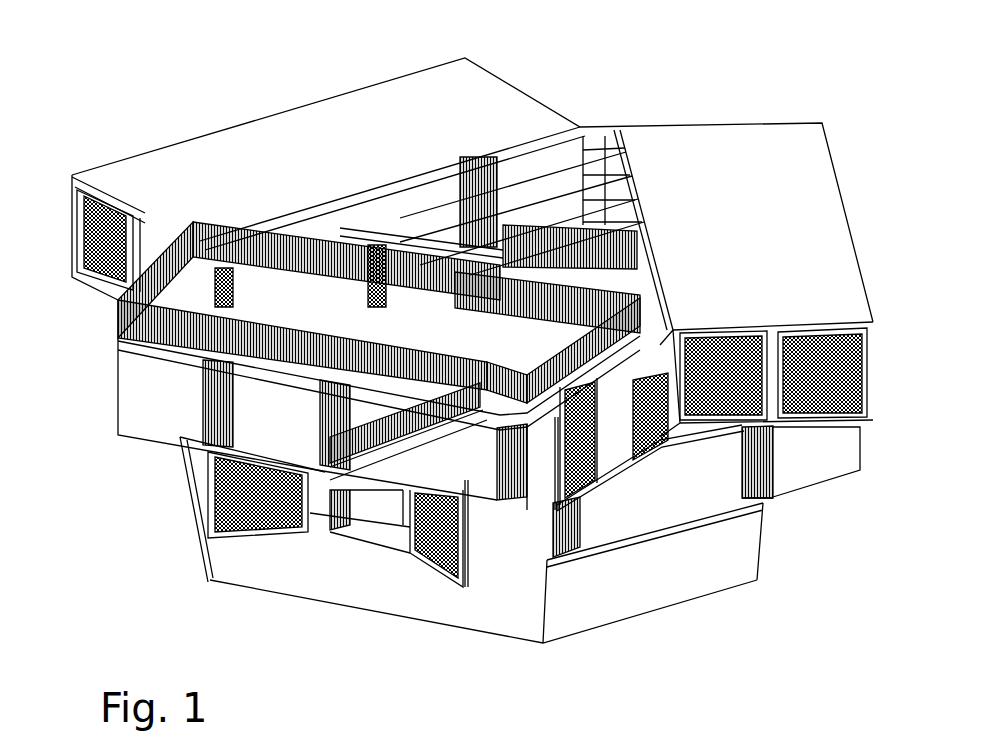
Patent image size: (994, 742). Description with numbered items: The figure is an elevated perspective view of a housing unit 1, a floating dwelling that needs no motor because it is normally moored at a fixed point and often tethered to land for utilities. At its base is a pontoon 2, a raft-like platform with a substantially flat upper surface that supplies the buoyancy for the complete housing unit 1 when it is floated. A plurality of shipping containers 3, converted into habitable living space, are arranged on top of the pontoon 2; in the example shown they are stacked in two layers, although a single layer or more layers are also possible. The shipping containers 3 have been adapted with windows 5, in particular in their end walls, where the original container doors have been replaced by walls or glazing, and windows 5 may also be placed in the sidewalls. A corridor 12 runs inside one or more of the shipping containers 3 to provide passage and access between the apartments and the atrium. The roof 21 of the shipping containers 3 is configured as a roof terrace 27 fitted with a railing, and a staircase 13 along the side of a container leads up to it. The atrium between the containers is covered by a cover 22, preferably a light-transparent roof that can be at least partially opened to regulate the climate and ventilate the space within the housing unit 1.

The housing unit 1 is at (208, 66).
The pontoon 2 is at (330, 603).
The shipping container 3 is at (877, 340).
The window 5 is at (100, 250).
The corridor 12 is at (345, 405).
The staircase 13 is at (440, 432).
The roof 21 is at (488, 103).
The cover 22 is at (563, 173).
The roof terrace 27 is at (190, 300).